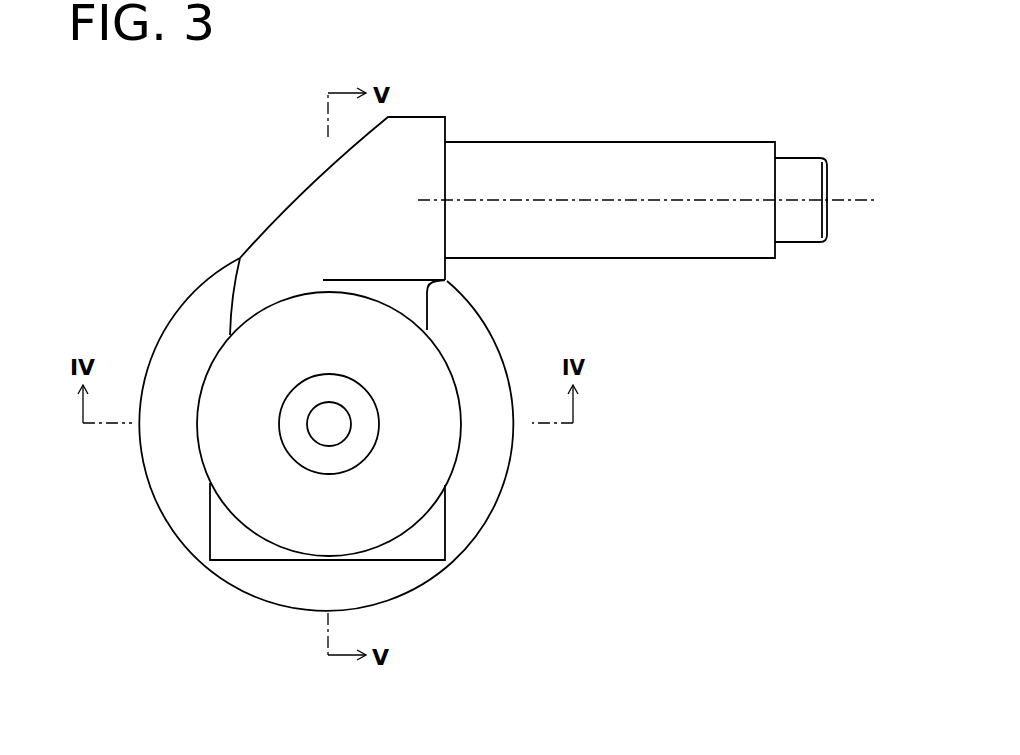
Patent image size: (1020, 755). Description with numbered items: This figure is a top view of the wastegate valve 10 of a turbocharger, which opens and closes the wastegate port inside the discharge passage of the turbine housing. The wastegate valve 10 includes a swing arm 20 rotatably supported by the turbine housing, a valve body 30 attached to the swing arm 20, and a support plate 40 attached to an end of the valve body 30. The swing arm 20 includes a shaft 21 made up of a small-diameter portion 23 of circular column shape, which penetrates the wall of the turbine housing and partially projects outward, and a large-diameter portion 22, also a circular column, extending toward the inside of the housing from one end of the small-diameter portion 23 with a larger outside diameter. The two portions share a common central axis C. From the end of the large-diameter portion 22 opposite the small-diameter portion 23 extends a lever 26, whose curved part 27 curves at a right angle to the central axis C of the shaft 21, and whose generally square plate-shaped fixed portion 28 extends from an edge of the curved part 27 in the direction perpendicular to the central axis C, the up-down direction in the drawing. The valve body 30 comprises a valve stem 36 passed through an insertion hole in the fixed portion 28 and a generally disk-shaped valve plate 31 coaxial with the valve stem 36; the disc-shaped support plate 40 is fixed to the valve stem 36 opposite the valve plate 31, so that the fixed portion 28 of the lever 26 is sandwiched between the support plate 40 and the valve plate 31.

The wastegate valve 10 is at (203, 183).
The swing arm 20 is at (428, 117).
The shaft 21 is at (802, 92).
The large-diameter portion 22 is at (723, 142).
The small-diameter portion 23 is at (802, 158).
The lever 26 is at (533, 262).
The curved part 27 is at (447, 268).
The fixed portion 28 is at (428, 307).
The valve body 30 is at (188, 581).
The valve plate 31 is at (148, 475).
The valve stem 36 is at (278, 432).
The support plate 40 is at (457, 452).
The central axis C is at (848, 198).